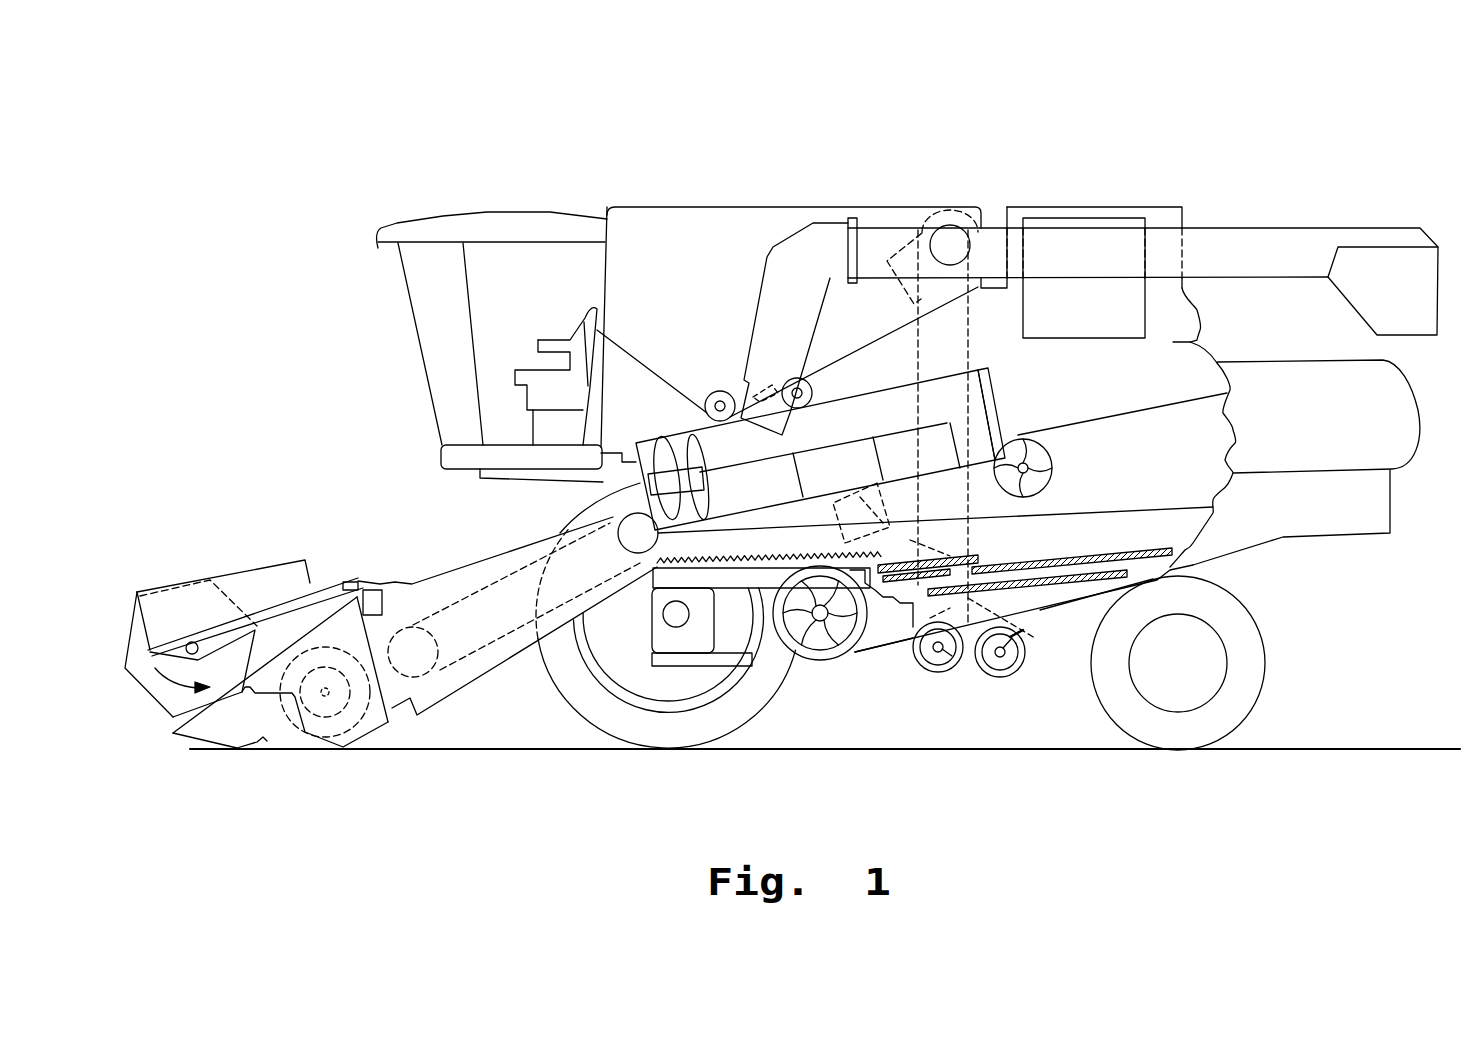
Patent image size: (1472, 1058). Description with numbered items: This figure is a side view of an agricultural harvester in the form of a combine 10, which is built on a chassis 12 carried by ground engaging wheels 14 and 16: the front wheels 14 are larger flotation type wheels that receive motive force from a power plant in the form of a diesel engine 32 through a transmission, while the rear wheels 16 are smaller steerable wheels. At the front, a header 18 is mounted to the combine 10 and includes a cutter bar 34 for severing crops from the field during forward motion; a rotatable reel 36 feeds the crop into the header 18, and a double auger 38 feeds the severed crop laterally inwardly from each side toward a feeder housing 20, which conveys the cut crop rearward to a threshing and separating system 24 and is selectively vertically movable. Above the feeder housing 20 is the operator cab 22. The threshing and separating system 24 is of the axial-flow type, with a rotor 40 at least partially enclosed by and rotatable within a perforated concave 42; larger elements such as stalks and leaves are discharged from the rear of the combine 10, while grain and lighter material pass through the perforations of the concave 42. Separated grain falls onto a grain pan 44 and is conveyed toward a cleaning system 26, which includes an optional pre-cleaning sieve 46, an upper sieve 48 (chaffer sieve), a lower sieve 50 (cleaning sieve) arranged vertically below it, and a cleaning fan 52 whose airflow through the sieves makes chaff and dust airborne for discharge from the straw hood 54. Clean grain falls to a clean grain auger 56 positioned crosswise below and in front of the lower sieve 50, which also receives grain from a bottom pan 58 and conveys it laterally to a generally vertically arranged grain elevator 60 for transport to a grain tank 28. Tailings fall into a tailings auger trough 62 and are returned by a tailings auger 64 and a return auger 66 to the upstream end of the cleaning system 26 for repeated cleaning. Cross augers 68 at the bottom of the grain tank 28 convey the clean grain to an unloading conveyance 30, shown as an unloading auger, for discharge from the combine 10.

The combine 10 is at (482, 186).
The chassis 12 is at (1195, 568).
The front wheels 14 is at (570, 703).
The rear wheels 16 is at (1262, 682).
The header 18 is at (228, 552).
The feeder housing 20 is at (457, 557).
The operator cab 22 is at (415, 319).
The threshing and separating system 24 is at (568, 496).
The cleaning system 26 is at (880, 688).
The grain tank 28 is at (665, 210).
The unloading conveyance 30 is at (1281, 240).
The diesel engine 32 is at (1073, 218).
The cutter bar 34 is at (243, 747).
The rotatable reel 36 is at (130, 640).
The double auger 38 is at (326, 697).
The rotor 40 is at (668, 455).
The perforated concave 42 is at (850, 455).
The grain pan 44 is at (653, 578).
The pre-cleaning sieve 46 is at (975, 565).
The upper sieve 48 is at (1082, 565).
The lower sieve 50 is at (1053, 590).
The cleaning fan 52 is at (827, 643).
The straw hood 54 is at (1403, 407).
The clean grain auger 56 is at (943, 665).
The bottom pan 58 is at (1098, 594).
The grain elevator 60 is at (975, 345).
The tailings auger trough 62 is at (1083, 597).
The tailings auger 64 is at (1000, 668).
The return auger 66 is at (910, 530).
The cross augers 68 is at (720, 391).